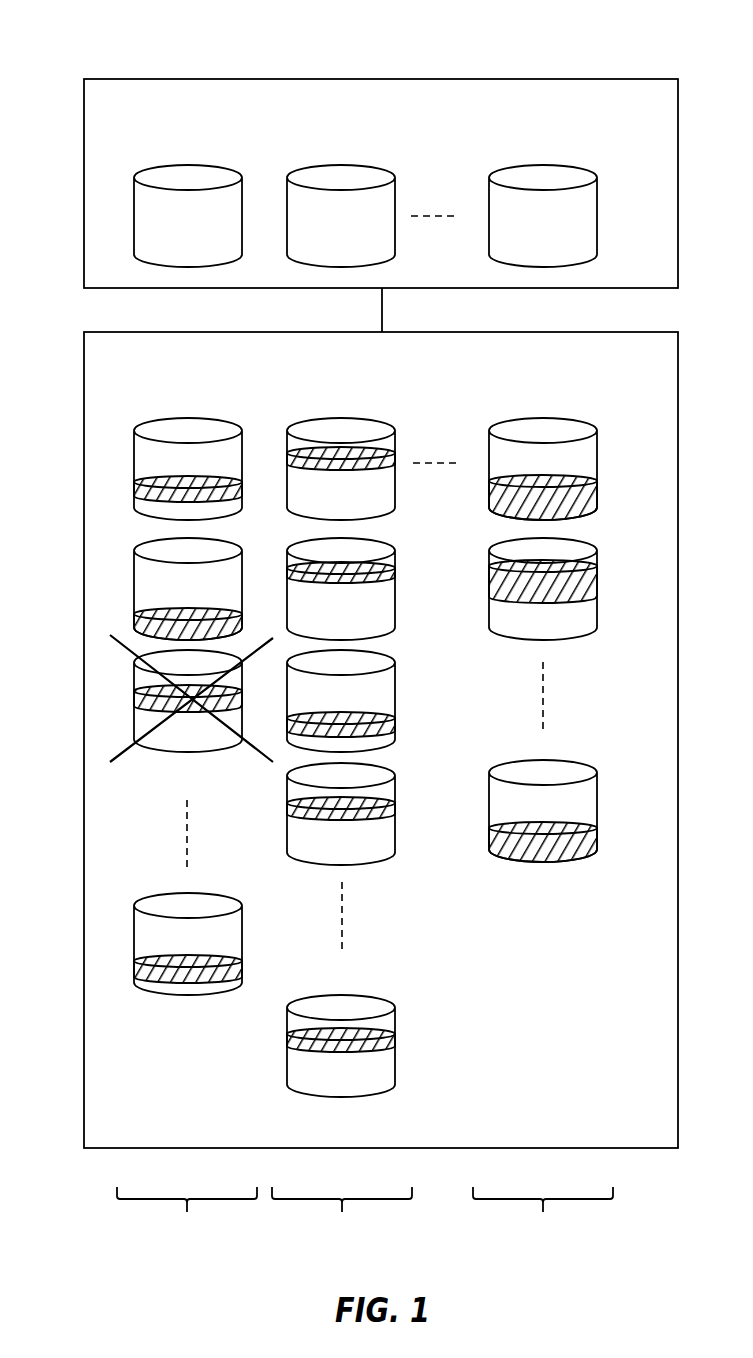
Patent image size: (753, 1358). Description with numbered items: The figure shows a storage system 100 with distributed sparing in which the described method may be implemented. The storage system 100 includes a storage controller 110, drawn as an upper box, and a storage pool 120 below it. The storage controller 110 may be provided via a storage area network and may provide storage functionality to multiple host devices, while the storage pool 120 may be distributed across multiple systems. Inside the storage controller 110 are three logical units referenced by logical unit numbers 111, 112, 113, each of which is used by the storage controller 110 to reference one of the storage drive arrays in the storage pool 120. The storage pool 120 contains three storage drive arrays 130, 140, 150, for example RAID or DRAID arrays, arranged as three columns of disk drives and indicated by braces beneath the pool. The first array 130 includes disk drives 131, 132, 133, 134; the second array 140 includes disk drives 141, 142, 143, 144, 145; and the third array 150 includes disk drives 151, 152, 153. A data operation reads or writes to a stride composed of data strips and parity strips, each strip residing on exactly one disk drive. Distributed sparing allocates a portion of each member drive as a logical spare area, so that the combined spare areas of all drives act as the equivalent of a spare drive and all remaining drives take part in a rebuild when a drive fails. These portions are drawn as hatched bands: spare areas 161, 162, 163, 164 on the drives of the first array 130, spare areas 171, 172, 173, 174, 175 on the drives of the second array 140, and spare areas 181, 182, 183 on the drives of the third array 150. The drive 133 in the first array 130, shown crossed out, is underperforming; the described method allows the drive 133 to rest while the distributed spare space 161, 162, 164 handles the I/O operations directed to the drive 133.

The storage system 100 is at (104, 46).
The storage controller 110 is at (420, 113).
The logical unit number 111 is at (171, 246).
The logical unit number 112 is at (324, 246).
The logical unit number 113 is at (526, 246).
The storage pool 120 is at (325, 367).
The storage drive array 130 is at (187, 1217).
The disk drive 131 is at (171, 467).
The disk drive 132 is at (171, 587).
The disk drive 133 is at (171, 736).
The disk drive 134 is at (171, 944).
The storage drive array 140 is at (342, 1217).
The disk drive 141 is at (324, 511).
The disk drive 142 is at (324, 629).
The disk drive 143 is at (324, 697).
The disk drive 144 is at (324, 847).
The disk drive 145 is at (324, 1081).
The storage drive array 150 is at (543, 1217).
The disk drive 151 is at (526, 467).
The disk drive 152 is at (526, 626).
The disk drive 153 is at (526, 809).
The spare area 161 is at (133, 497).
The spare area 162 is at (133, 622).
The spare area 163 is at (137, 701).
The spare area 164 is at (137, 971).
The spare area 171 is at (392, 467).
The spare area 172 is at (390, 573).
The spare area 173 is at (395, 728).
The spare area 174 is at (395, 813).
The spare area 175 is at (397, 1032).
The spare area 181 is at (598, 490).
The spare area 182 is at (592, 592).
The spare area 183 is at (598, 843).